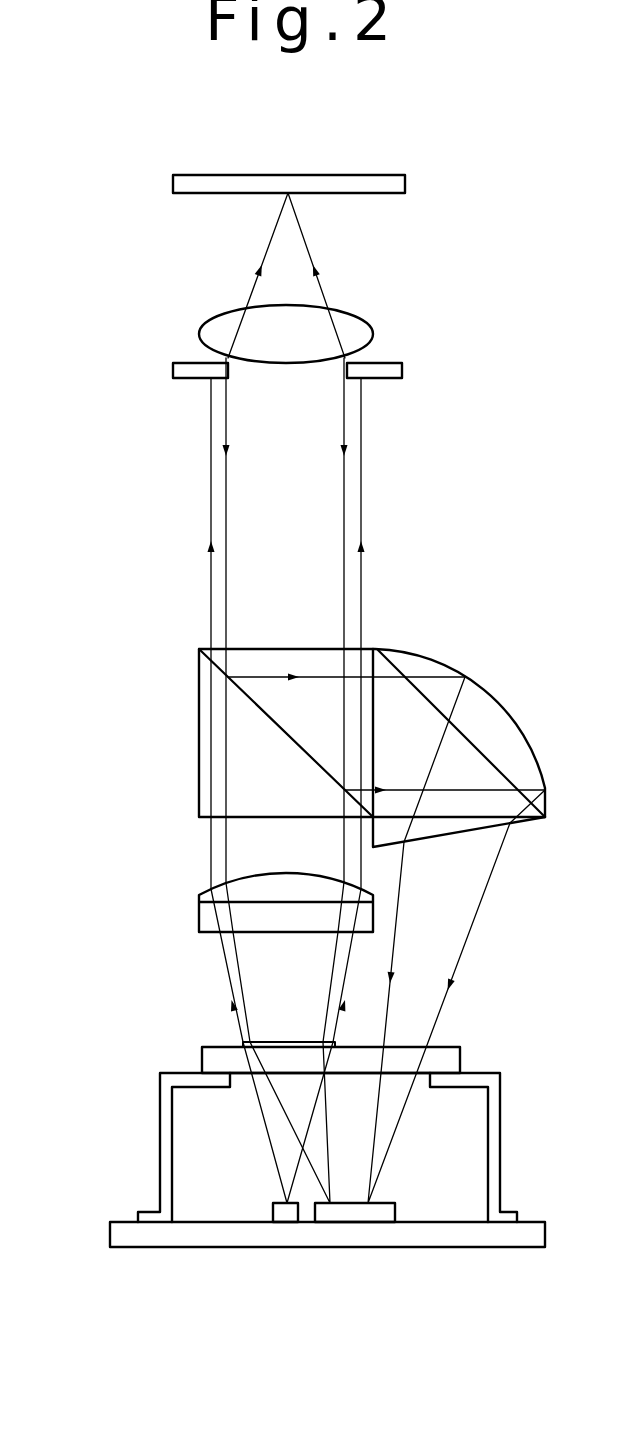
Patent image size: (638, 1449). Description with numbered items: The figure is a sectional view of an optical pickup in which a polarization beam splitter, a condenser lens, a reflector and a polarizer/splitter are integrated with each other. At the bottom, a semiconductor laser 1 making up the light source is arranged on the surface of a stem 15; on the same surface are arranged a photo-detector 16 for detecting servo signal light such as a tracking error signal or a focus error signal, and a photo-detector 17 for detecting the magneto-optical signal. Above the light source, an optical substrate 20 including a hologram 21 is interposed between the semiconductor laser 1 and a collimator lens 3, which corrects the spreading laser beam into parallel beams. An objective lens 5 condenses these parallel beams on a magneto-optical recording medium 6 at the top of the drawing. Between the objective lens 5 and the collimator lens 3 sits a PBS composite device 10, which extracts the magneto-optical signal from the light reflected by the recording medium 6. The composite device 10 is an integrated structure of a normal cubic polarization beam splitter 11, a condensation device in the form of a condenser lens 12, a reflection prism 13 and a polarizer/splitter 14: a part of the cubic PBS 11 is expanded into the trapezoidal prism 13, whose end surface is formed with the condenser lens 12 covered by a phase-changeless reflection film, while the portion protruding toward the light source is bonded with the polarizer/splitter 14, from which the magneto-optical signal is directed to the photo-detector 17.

The semiconductor laser 1 is at (253, 1233).
The collimator lens 3 is at (199, 905).
The objective lens 5 is at (373, 345).
The magneto-optical recording medium 6 is at (405, 183).
The polarization beam splitter composite device 10 is at (332, 746).
The polarization beam splitter 11 is at (193, 718).
The condenser lens 12 is at (525, 728).
The reflection prism 13 is at (460, 800).
The polarizer/splitter 14 is at (488, 827).
The stem 15 is at (467, 1247).
The photo-detector 16 is at (333, 1217).
The photo-detector 17 is at (362, 1213).
The optical substrate 20 is at (480, 1040).
The hologram 21 is at (243, 1042).